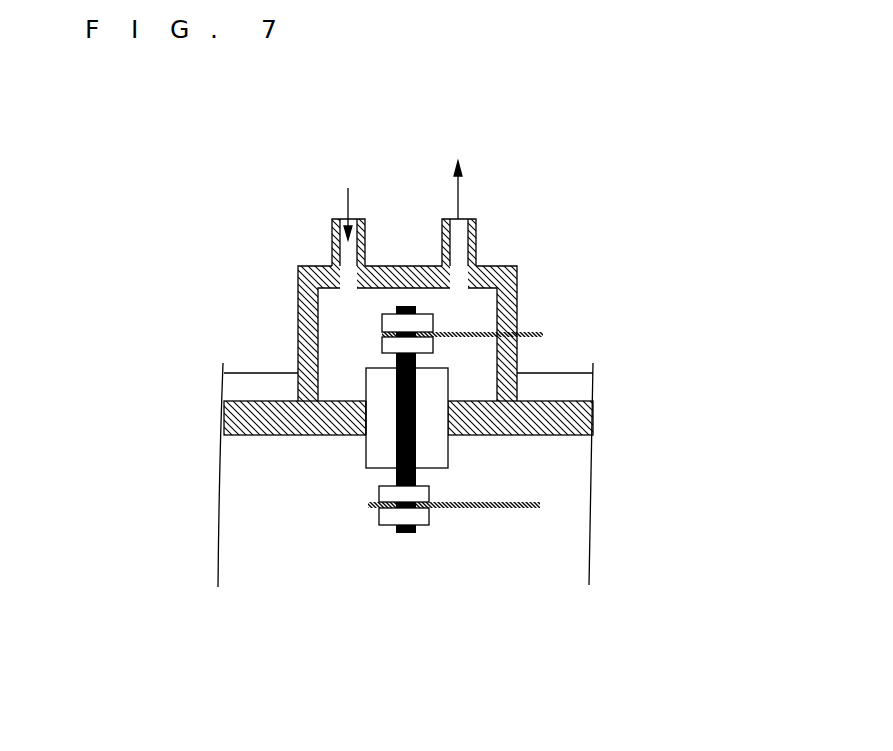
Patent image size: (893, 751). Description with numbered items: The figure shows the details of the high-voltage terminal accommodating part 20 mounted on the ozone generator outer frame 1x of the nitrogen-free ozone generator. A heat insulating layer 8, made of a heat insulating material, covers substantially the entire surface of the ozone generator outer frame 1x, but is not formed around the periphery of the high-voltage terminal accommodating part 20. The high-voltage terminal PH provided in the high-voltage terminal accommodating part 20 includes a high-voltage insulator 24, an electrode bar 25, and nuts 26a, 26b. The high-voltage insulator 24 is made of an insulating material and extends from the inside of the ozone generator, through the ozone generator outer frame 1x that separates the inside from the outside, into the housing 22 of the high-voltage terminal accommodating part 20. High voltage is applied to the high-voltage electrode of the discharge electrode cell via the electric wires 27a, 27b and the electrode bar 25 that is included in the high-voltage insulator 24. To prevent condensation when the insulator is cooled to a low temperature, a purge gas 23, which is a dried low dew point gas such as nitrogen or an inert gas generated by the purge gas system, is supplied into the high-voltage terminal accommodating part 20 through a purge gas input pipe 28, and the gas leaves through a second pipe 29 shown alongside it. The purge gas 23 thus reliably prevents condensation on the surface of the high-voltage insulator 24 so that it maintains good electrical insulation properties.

The ozone generator outer frame 1x is at (590, 420).
The heat insulating layer 8 is at (255, 381).
The high-voltage terminal accommodating part 20 is at (422, 308).
The housing 22 is at (422, 308).
The purge gas 23 is at (348, 197).
The high-voltage insulator 24 is at (448, 456).
The electrode bar 25 is at (396, 480).
The nut 26a is at (433, 316).
The nut 26b is at (429, 517).
The electric wire 27a is at (457, 338).
The electric wire 27b is at (518, 508).
The purge gas input pipe 28 is at (332, 232).
The outlet pipe 29 is at (476, 233).
The high-voltage terminal PH is at (365, 439).